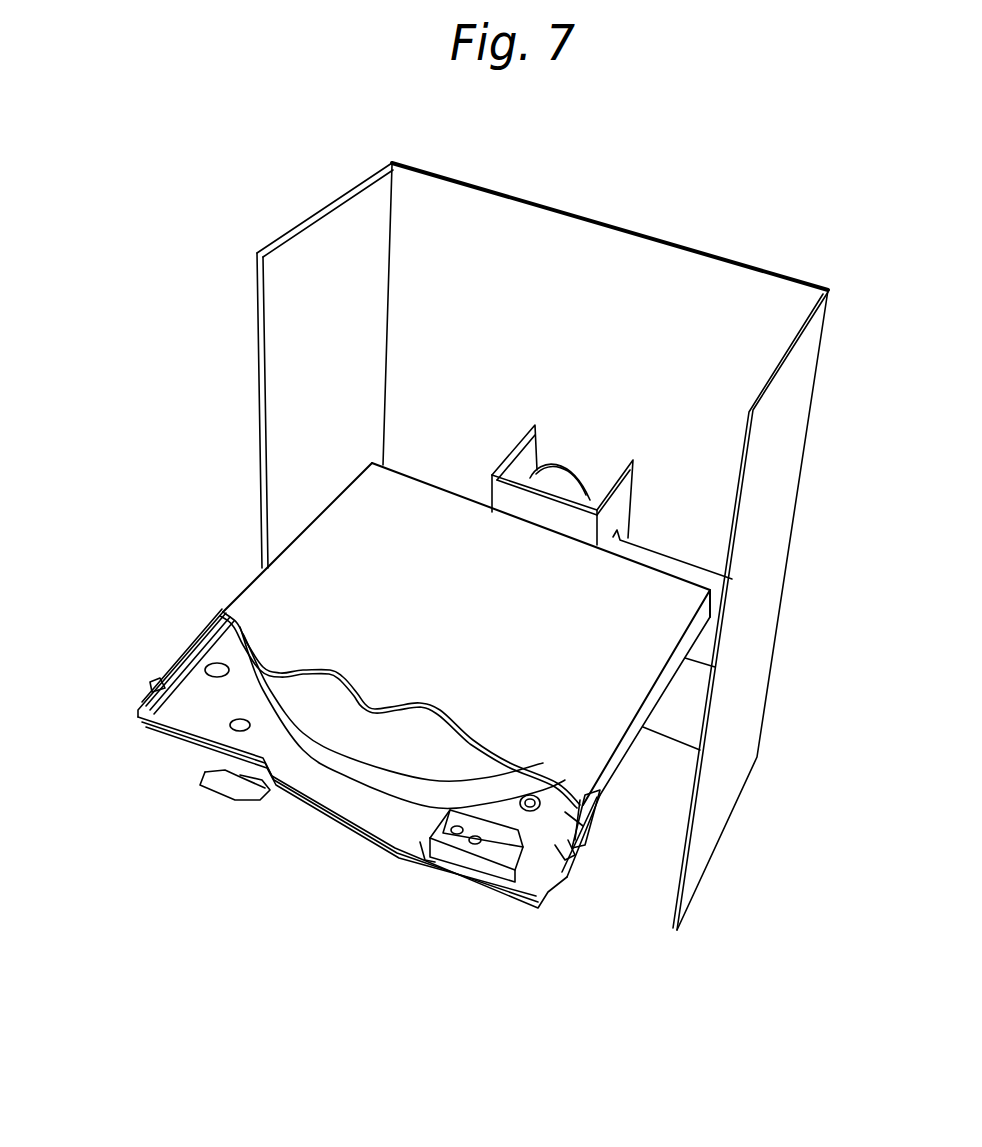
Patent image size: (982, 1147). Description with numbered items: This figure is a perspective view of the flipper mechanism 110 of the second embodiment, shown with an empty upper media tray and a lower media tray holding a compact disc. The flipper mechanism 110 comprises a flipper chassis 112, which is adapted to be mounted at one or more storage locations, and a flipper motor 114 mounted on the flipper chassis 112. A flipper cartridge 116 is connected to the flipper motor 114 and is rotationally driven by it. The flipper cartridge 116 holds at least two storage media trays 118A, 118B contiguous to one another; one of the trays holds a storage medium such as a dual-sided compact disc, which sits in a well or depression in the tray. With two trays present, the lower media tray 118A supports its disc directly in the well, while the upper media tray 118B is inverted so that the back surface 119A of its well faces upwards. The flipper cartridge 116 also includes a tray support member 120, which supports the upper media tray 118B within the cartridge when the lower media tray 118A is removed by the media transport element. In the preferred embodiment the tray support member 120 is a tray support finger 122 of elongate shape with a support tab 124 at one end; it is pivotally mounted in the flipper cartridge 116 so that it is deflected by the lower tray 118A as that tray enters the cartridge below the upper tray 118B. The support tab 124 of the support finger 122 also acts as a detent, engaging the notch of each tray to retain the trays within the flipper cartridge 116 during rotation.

The flipper mechanism 110 is at (536, 515).
The flipper chassis 112 is at (755, 323).
The flipper motor 114 is at (578, 465).
The flipper cartridge 116 is at (622, 643).
The lower media tray 118A is at (240, 770).
The upper media tray 118B is at (400, 832).
The back surface of the well or depression 119A is at (380, 741).
The tray support member 120 is at (371, 728).
The tray support finger 122 is at (421, 796).
The support tab 124 is at (150, 685).